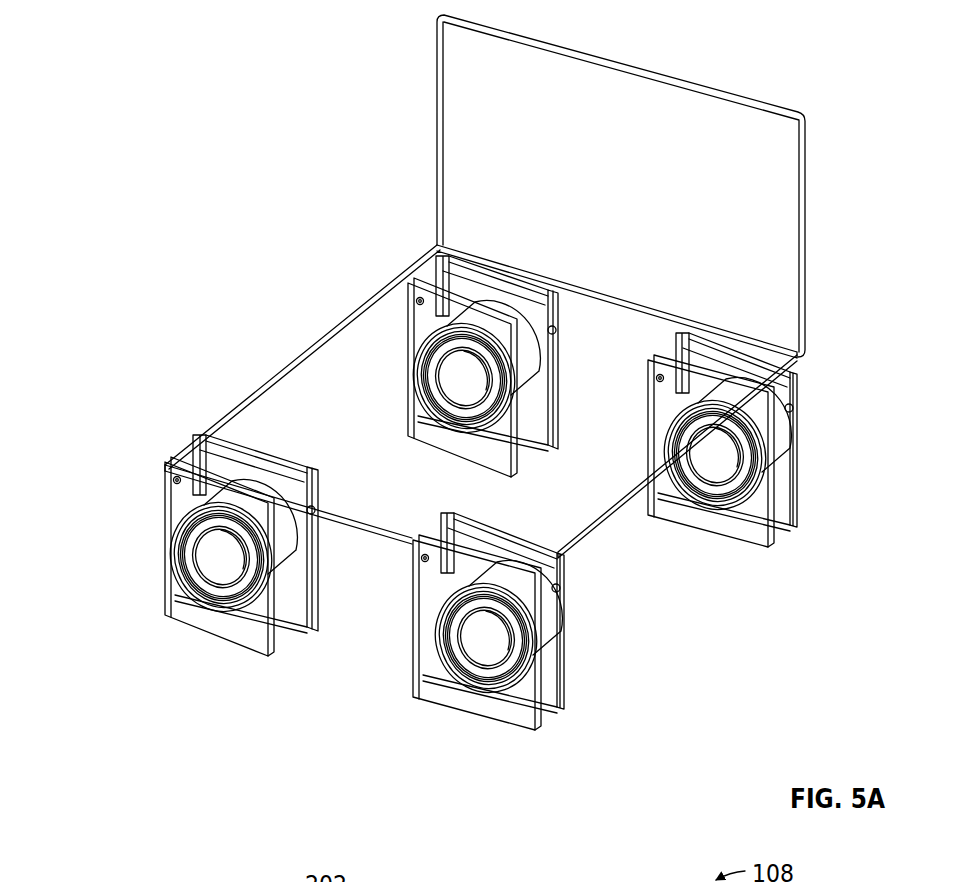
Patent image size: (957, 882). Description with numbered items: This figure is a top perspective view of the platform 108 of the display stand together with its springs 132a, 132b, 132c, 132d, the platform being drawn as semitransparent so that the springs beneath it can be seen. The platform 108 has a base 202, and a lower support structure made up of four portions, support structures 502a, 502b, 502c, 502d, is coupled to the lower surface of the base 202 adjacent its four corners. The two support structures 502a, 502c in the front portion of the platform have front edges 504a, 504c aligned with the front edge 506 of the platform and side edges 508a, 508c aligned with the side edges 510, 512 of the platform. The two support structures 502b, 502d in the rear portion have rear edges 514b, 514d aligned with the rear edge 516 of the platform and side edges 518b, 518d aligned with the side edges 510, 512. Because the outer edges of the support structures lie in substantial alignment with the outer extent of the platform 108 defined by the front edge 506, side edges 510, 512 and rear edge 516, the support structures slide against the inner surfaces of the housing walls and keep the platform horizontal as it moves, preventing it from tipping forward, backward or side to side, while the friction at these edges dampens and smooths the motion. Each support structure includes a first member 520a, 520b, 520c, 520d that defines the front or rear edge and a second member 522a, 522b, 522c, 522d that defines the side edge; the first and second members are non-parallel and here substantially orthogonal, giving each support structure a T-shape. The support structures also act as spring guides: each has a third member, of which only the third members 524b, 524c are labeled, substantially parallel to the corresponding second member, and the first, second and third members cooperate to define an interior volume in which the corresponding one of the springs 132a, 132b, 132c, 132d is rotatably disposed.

The platform 108 is at (818, 60).
The rear edge 516 is at (572, 284).
The base 202 is at (622, 532).
The side edge 510 is at (228, 412).
The front edge 506 is at (380, 540).
The side edge 512 is at (665, 520).
The spring 132a is at (130, 540).
The spring 132b is at (332, 318).
The spring 132c is at (556, 722).
The spring 132d is at (797, 547).
The support structure 502a is at (150, 470).
The support structure 502b is at (347, 402).
The support structure 502c is at (420, 722).
The support structure 502d is at (762, 565).
The second member 522a is at (196, 625).
The second member 522b is at (503, 285).
The second member 522c is at (485, 718).
The second member 522d is at (795, 455).
The side edge 508a is at (165, 605).
The side edge 508c is at (542, 727).
The side edge 518b is at (407, 322).
The side edge 518d is at (795, 500).
The first member 520a is at (308, 635).
The first member 520b is at (563, 420).
The first member 520c is at (410, 618).
The first member 520d is at (683, 322).
The rear edge 514b is at (560, 350).
The rear edge 514d is at (722, 322).
The front edge 504a is at (277, 655).
The front edge 504c is at (410, 673).
The third member 524b is at (457, 460).
The third member 524c is at (567, 700).